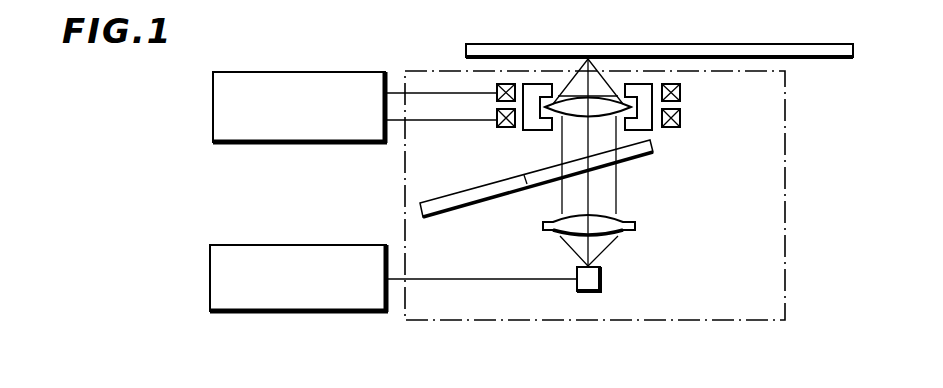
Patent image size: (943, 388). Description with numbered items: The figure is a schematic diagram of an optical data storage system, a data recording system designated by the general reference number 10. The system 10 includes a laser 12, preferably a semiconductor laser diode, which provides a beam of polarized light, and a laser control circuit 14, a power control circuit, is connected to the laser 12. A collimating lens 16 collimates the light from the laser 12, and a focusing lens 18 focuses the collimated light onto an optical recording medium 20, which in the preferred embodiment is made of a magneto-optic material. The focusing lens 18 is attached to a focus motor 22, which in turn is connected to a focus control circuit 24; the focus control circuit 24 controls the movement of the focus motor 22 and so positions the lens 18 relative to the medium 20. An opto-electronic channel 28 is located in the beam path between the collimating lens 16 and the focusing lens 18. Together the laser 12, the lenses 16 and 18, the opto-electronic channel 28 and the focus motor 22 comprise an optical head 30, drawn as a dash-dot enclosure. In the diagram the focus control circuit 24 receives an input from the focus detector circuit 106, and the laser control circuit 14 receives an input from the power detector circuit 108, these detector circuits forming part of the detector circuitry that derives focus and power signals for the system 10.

The data recording system 10 is at (398, 328).
The laser 12 is at (601, 284).
The laser control circuit 14 is at (325, 223).
The collimating lens 16 is at (637, 222).
The focusing lens 18 is at (606, 120).
The optical recording medium 20 is at (787, 44).
The focus motor 22 is at (507, 127).
The focus control circuit 24 is at (338, 72).
The opto-electronic channel 28 is at (478, 209).
The optical head 30 is at (786, 160).
The focus detector circuit 106 is at (200, 107).
The power detector circuit 108 is at (198, 278).